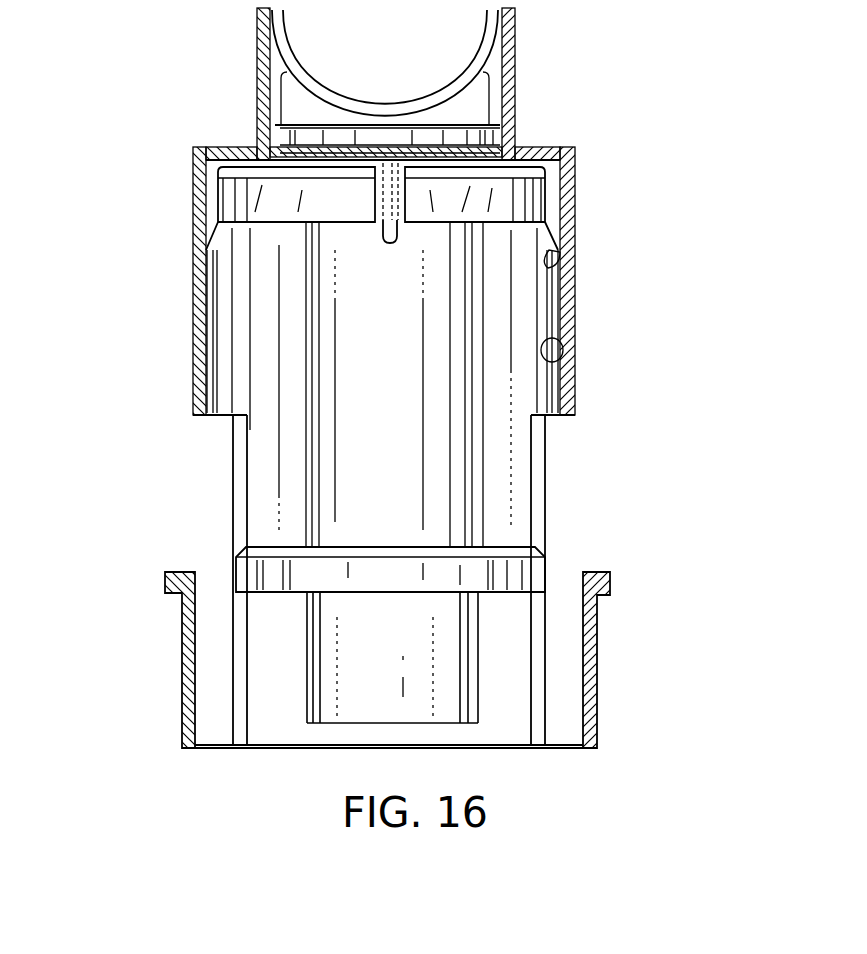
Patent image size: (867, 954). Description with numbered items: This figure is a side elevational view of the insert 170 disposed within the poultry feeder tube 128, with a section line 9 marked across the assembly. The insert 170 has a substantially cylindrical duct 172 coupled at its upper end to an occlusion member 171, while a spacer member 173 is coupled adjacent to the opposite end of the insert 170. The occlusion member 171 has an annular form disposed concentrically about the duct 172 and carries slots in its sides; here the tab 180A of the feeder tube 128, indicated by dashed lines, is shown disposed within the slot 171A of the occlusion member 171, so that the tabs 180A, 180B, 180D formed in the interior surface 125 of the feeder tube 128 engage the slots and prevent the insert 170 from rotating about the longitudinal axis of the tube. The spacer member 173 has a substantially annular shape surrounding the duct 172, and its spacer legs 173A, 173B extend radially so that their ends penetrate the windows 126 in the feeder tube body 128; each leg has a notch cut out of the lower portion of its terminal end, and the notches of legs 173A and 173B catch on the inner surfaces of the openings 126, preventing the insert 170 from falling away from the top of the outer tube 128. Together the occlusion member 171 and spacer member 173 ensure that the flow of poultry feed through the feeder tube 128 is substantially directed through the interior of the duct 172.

The section line 9- 9 is at (70, 195).
The interior surface 125 is at (575, 353).
The windows 126 is at (240, 516).
The poultry feeder tube 128 is at (557, 140).
The insert 170 is at (326, 386).
The occlusion member 171 is at (297, 206).
The slot 171A is at (378, 200).
The duct 172 is at (417, 513).
The spacer member 173 is at (383, 573).
The spacer leg 173A is at (542, 553).
The spacer leg 173B is at (270, 558).
The tab 180A is at (393, 337).
The tab 180B is at (222, 243).
The tab 180D is at (550, 262).